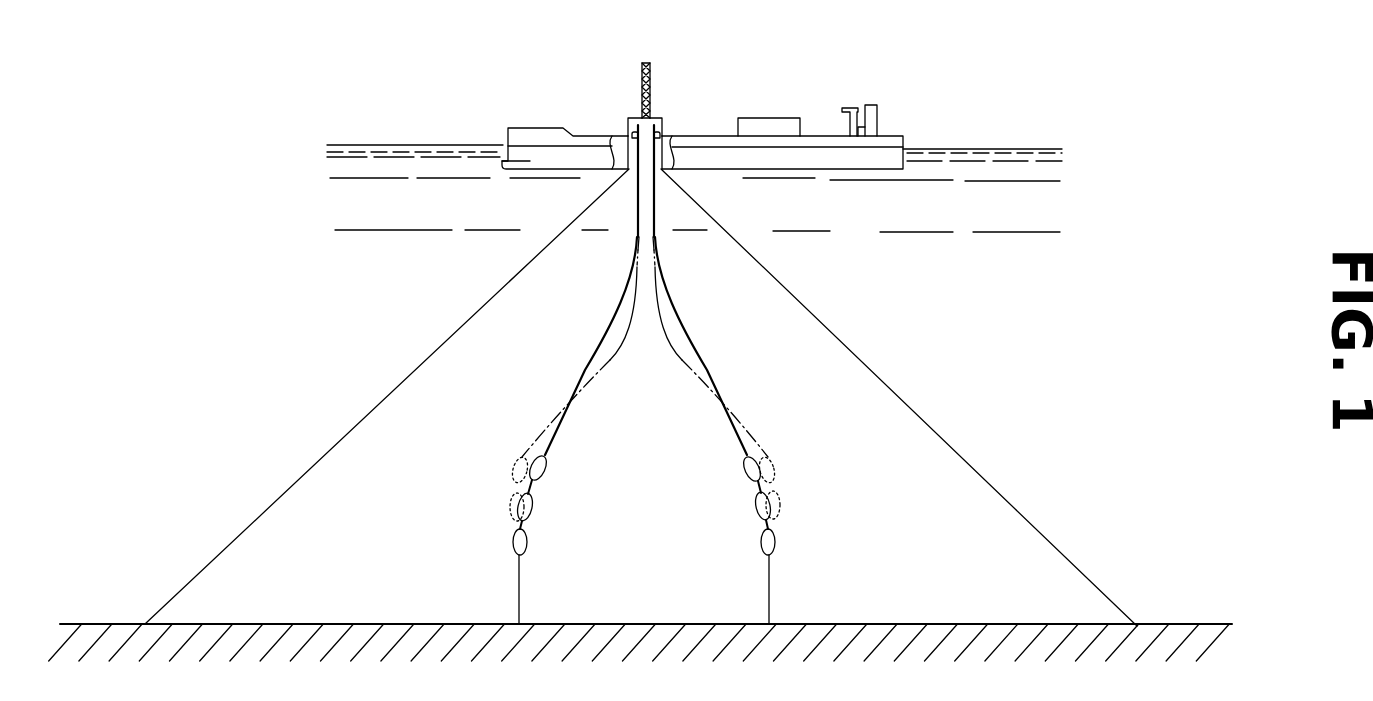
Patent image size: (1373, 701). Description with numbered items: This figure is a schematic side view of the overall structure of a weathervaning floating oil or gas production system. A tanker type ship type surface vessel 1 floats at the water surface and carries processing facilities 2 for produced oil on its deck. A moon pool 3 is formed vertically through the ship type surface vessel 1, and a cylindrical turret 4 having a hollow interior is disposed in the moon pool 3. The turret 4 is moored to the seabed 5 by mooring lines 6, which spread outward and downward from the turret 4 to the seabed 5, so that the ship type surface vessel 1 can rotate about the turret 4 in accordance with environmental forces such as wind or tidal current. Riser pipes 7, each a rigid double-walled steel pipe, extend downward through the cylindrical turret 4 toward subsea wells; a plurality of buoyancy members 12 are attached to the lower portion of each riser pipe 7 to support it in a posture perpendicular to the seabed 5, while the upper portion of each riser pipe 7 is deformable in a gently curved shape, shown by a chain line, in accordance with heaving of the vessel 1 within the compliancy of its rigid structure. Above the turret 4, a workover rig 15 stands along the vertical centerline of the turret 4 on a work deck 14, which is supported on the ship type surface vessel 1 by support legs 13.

The ship type surface vessel 1 is at (895, 136).
The processing facilities 2 is at (780, 118).
The moon pool 3 is at (663, 137).
The cylindrical turret 4 is at (663, 152).
The seabed 5 is at (882, 625).
The mooring lines 6 is at (812, 314).
The riser pipes 7 is at (590, 360).
The buoyancy members 12 is at (747, 467).
The support legs 13 is at (628, 128).
The work deck 14 is at (643, 110).
The workover rig 15 is at (650, 82).